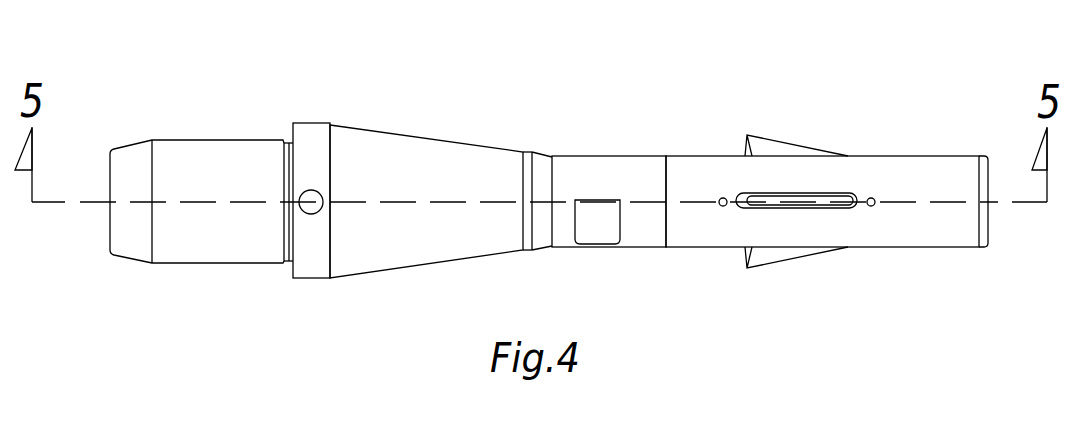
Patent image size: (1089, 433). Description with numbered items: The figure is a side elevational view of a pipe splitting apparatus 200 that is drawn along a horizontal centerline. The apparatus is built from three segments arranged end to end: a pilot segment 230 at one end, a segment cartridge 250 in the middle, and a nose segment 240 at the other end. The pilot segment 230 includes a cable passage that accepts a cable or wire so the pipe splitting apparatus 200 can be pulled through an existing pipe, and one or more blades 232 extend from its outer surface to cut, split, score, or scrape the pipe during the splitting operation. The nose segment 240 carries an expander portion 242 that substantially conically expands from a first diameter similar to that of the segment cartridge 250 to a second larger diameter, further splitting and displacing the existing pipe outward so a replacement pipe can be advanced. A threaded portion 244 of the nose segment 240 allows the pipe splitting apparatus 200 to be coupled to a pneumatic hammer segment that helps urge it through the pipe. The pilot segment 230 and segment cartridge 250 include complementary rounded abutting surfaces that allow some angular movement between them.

The pipe splitting apparatus 200 is at (1003, 42).
The pilot segment 230 is at (920, 142).
The blades 232 is at (773, 142).
The nose segment 240 is at (341, 96).
The expander portion 242 is at (368, 147).
The threaded portion 244 is at (203, 145).
The segment cartridge 250 is at (636, 140).